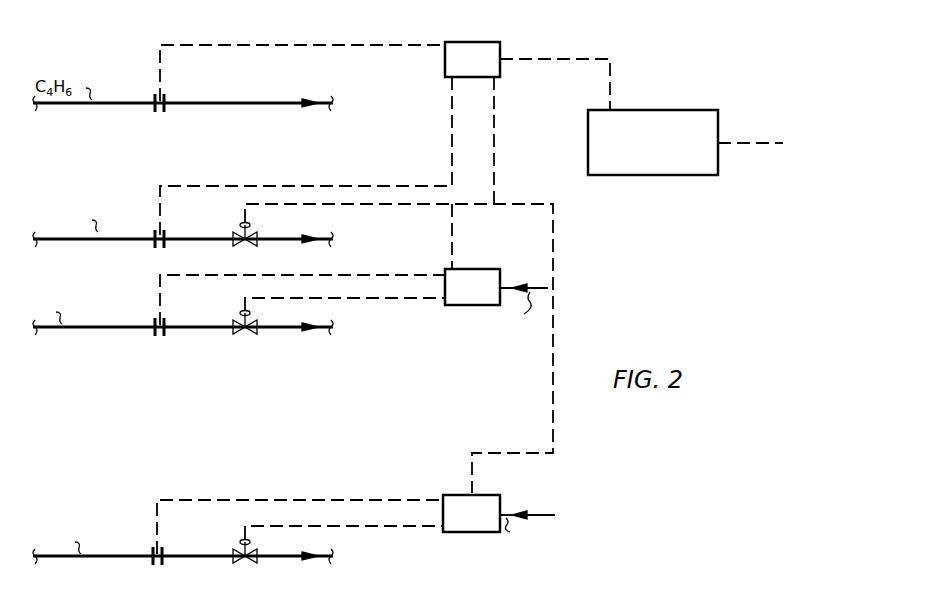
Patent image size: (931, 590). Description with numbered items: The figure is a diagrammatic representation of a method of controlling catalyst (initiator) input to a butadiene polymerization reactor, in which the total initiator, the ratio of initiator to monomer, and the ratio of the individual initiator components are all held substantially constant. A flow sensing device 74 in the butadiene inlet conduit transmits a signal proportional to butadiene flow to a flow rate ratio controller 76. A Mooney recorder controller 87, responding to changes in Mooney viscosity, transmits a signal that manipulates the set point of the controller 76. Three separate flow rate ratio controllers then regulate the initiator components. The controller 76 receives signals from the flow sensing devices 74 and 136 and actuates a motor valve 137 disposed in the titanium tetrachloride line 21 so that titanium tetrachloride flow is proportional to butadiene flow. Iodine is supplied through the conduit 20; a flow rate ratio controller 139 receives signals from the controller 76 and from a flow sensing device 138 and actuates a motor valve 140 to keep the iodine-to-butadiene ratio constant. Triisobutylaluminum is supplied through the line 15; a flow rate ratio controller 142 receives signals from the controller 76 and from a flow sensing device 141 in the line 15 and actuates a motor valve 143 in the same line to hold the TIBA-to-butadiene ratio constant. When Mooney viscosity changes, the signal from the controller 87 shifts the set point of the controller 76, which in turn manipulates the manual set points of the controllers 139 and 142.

The flow sensing device 74 is at (167, 96).
The flow rate ratio controller 76 is at (466, 42).
The Mooney recorder controller 87 is at (690, 110).
The line 21 is at (106, 241).
The flow sensing device 136 is at (167, 233).
The motor valve 137 is at (250, 225).
The conduit 20 is at (96, 329).
The flow sensing device 138 is at (166, 333).
The flow rate ratio controller 139 is at (487, 269).
The motor valve 140 is at (250, 331).
The line 15 is at (105, 558).
The flow sensing device 141 is at (165, 553).
The flow rate ratio controller 142 is at (488, 495).
The motor valve 143 is at (249, 542).